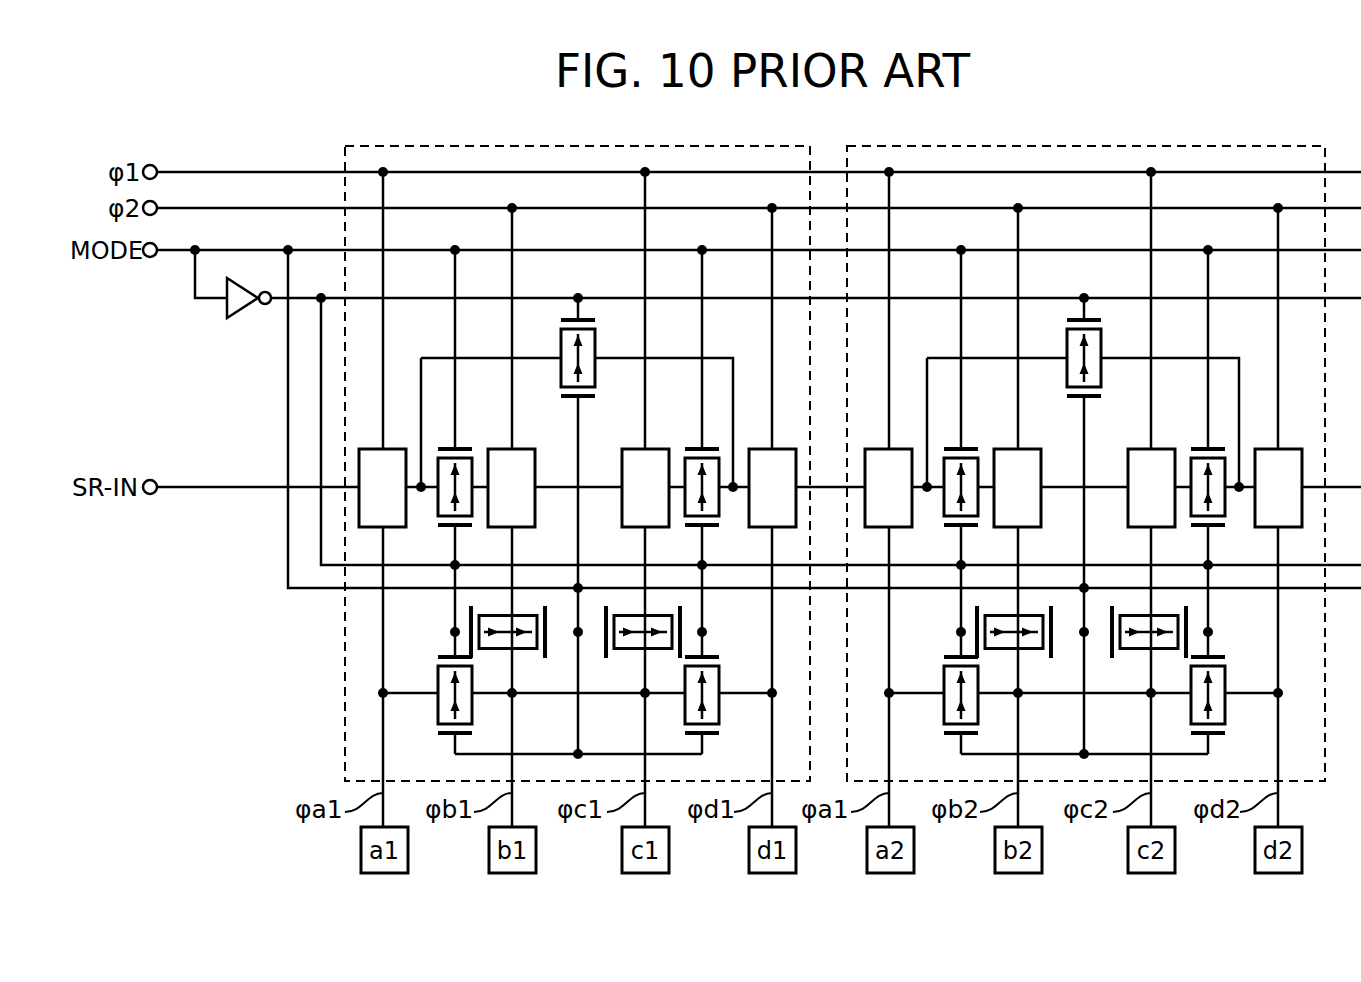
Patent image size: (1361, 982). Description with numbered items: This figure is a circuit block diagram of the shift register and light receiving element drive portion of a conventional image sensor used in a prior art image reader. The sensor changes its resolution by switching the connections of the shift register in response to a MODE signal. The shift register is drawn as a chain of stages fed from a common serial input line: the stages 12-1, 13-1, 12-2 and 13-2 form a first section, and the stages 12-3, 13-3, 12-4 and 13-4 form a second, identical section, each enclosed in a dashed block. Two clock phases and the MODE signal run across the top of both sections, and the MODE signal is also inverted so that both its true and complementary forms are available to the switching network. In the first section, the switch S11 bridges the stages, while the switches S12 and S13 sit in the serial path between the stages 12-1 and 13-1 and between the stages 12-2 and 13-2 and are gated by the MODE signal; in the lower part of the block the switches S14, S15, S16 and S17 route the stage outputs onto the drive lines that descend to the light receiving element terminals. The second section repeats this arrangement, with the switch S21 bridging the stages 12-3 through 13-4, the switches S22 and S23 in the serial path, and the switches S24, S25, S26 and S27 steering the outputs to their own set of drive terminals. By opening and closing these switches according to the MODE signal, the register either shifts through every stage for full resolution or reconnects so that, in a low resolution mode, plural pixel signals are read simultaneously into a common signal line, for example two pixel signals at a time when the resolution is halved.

The shift register stage 12-1 is at (406, 508).
The shift register stage 12-2 is at (622, 497).
The shift register stage 12-3 is at (912, 508).
The shift register stage 12-4 is at (1128, 497).
The shift register stage 13-1 is at (535, 508).
The shift register stage 13-2 is at (749, 497).
The shift register stage 13-3 is at (1041, 508).
The shift register stage 13-4 is at (1255, 497).
The switch S11 is at (597, 345).
The switch S12 is at (474, 470).
The switch S13 is at (684, 472).
The switch S14 is at (532, 648).
The switch S15 is at (620, 648).
The switch S16 is at (438, 704).
The switch S17 is at (719, 700).
The switch S21 is at (1103, 345).
The switch S22 is at (980, 470).
The switch S23 is at (1190, 472).
The switch S24 is at (1038, 648).
The switch S25 is at (1126, 648).
The switch S26 is at (944, 704).
The switch S27 is at (1225, 700).